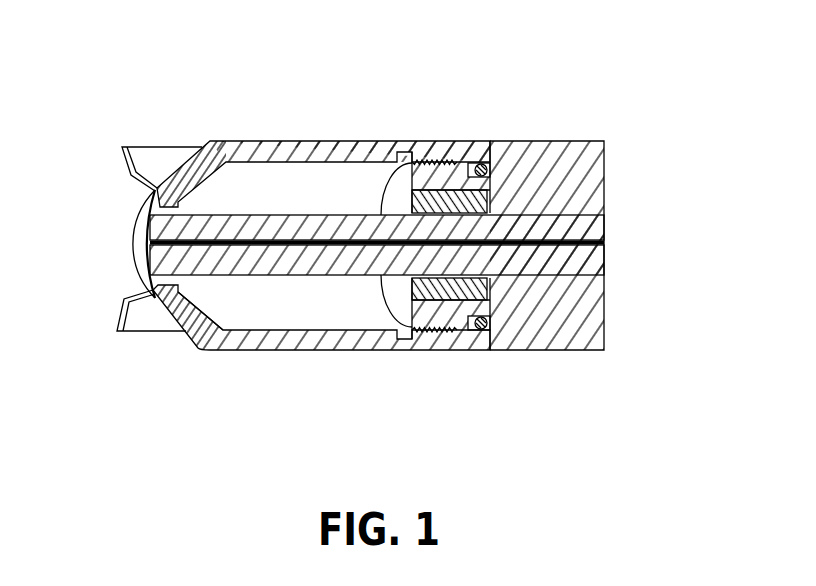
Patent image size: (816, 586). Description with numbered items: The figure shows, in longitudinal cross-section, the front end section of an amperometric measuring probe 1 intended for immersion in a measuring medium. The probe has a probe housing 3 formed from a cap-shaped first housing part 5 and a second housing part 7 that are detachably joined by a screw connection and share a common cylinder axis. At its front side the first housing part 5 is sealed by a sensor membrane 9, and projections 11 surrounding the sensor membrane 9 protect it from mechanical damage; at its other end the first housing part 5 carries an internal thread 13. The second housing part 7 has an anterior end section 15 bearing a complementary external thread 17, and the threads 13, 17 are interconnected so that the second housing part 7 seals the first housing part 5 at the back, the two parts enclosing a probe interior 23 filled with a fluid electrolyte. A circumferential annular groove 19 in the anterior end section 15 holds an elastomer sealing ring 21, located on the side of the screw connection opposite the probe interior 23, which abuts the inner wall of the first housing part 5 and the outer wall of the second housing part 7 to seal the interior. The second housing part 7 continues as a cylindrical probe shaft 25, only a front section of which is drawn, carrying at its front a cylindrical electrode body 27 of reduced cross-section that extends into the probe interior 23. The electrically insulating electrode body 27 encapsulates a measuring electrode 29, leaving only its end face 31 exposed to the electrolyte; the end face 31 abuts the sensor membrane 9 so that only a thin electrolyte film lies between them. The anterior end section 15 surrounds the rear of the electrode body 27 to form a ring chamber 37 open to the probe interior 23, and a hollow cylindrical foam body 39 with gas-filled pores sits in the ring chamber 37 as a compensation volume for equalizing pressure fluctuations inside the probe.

The amperometric measuring probe 1 is at (584, 108).
The probe housing 3 is at (413, 108).
The first housing part 5 is at (332, 140).
The second housing part 7 is at (573, 330).
The sensor membrane 9 is at (137, 233).
The projections 11 is at (156, 150).
The internal thread 13 is at (448, 330).
The anterior end section 15 is at (448, 172).
The external thread 17 is at (420, 333).
The annular groove 19 is at (490, 172).
The sealing ring 21 is at (488, 322).
The probe interior 23 is at (297, 305).
The probe shaft 25 is at (587, 224).
The electrode body 27 is at (233, 276).
The measuring electrode 29 is at (578, 244).
The end face 31 is at (150, 243).
The ring chamber 37 is at (482, 302).
The foam body 39 is at (482, 203).